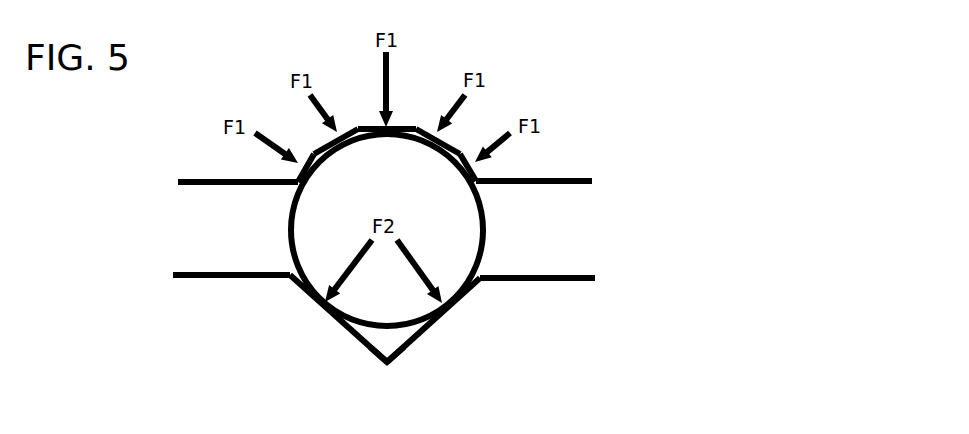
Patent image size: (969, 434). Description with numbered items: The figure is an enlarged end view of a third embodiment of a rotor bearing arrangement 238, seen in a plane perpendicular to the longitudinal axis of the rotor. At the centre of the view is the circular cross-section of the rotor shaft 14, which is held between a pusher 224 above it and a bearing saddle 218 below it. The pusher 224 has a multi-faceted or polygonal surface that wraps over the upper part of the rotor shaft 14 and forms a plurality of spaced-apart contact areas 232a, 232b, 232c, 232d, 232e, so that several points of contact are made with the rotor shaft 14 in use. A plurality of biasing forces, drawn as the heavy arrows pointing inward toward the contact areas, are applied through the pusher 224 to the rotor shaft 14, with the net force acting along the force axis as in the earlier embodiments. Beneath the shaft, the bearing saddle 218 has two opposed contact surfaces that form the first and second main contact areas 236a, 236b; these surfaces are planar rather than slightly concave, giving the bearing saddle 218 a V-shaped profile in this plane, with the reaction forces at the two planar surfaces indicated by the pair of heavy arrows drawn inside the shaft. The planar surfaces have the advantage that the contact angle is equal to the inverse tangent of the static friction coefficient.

The rotor shaft 14 is at (487, 230).
The pusher 224 is at (588, 145).
The contact area 232a is at (295, 170).
The contact area 232b is at (310, 145).
The contact area 232c is at (363, 125).
The contact area 232d is at (425, 127).
The contact area 232e is at (463, 150).
The rotor bearing arrangement 238 is at (573, 127).
The first main contact area 236a is at (298, 295).
The second main contact area 236b is at (462, 295).
The bearing saddle 218 is at (352, 345).